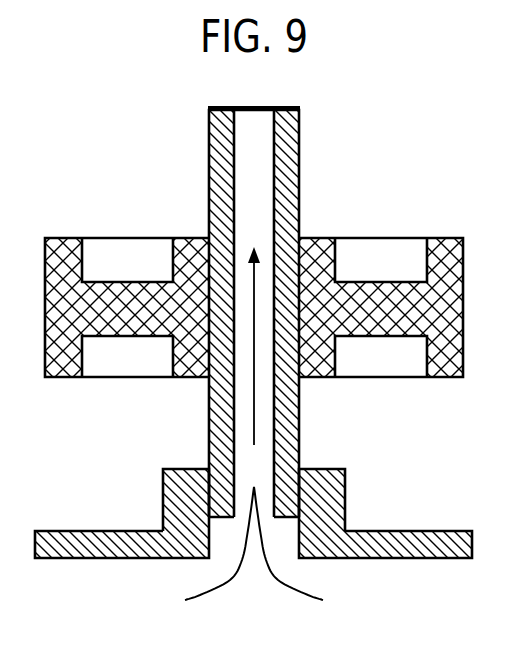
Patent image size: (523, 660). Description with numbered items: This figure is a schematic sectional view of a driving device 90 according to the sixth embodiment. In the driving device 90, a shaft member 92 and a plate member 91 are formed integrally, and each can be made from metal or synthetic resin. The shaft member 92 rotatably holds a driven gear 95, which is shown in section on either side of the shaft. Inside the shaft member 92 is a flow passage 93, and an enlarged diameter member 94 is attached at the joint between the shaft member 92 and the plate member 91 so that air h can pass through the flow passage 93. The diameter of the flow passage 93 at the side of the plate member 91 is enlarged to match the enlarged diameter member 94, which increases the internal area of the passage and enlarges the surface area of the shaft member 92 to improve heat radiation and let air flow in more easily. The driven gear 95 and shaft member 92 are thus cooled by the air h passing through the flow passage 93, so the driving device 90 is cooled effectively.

The driving device 90 is at (384, 172).
The plate member 91 is at (425, 532).
The shaft member 92 is at (299, 156).
The flow passage 93 is at (246, 178).
The enlarged diameter member 94 is at (345, 500).
The driven gear 95 is at (395, 238).
The air h is at (252, 442).